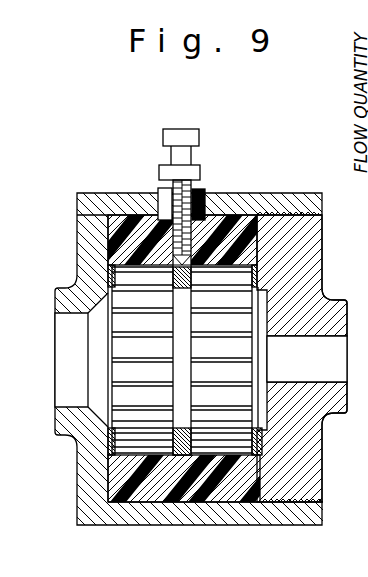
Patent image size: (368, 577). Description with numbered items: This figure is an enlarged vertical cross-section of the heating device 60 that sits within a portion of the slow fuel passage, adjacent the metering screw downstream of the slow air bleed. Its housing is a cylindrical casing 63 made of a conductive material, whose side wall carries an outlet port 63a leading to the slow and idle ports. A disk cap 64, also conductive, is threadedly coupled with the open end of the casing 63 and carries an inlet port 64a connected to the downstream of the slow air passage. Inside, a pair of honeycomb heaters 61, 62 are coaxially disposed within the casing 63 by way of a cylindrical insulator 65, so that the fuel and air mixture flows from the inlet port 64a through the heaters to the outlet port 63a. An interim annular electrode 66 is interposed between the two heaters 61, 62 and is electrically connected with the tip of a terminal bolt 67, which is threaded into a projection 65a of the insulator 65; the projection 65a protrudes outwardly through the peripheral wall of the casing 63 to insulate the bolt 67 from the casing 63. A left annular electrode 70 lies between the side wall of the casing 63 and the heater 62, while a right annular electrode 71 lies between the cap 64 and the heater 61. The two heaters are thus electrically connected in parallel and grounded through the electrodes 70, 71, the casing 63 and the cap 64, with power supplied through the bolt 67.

The heating device 60 is at (294, 184).
The honeycomb heater 61 is at (237, 437).
The honeycomb heater 62 is at (141, 436).
The cylindrical casing 63 is at (102, 198).
The outlet port 63a is at (68, 316).
The disk cap 64 is at (315, 247).
The inlet port 64a is at (290, 338).
The cylindrical insulator 65 is at (232, 222).
The projection 65a is at (200, 197).
The interim annular electrode 66 is at (192, 456).
The terminal bolt 67 is at (185, 137).
The left annular electrode 70 is at (114, 437).
The right annular electrode 71 is at (262, 439).